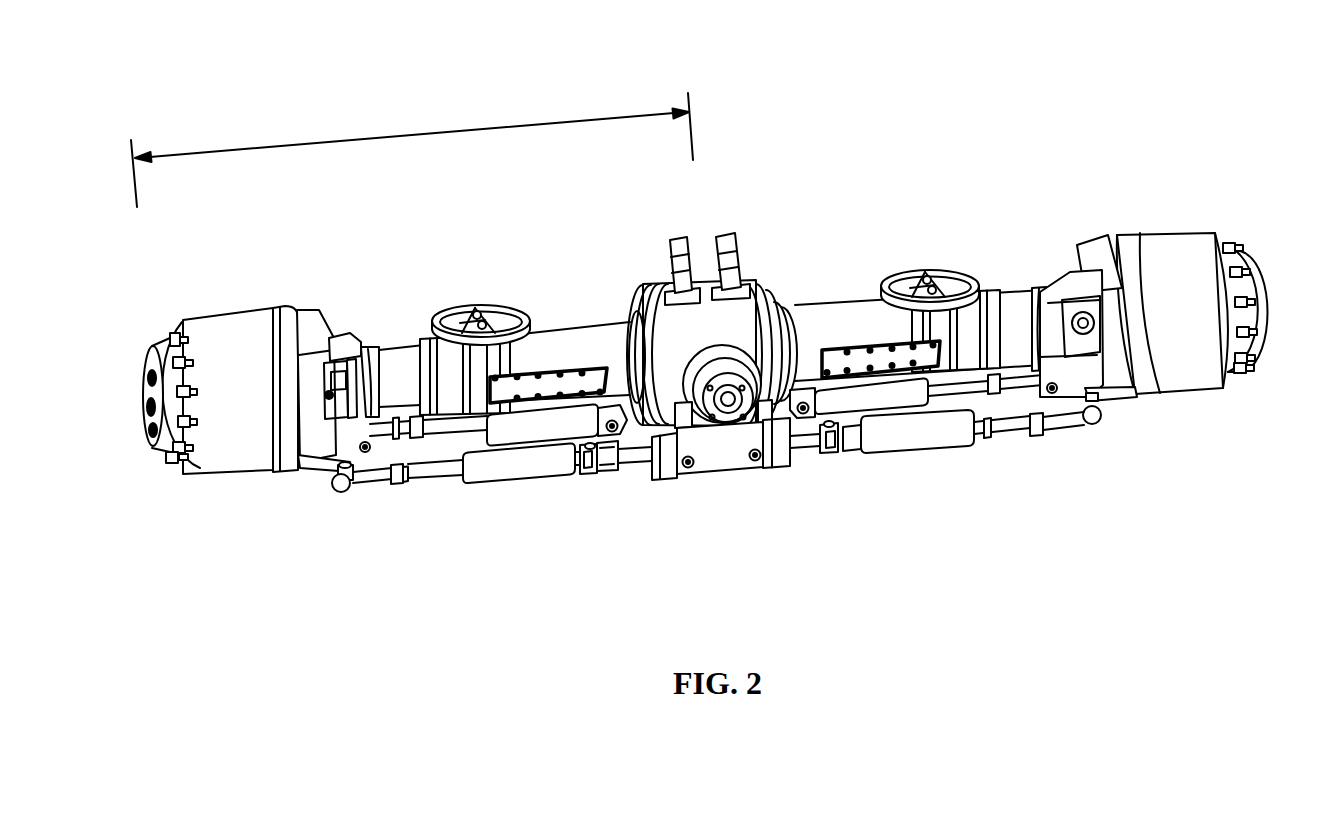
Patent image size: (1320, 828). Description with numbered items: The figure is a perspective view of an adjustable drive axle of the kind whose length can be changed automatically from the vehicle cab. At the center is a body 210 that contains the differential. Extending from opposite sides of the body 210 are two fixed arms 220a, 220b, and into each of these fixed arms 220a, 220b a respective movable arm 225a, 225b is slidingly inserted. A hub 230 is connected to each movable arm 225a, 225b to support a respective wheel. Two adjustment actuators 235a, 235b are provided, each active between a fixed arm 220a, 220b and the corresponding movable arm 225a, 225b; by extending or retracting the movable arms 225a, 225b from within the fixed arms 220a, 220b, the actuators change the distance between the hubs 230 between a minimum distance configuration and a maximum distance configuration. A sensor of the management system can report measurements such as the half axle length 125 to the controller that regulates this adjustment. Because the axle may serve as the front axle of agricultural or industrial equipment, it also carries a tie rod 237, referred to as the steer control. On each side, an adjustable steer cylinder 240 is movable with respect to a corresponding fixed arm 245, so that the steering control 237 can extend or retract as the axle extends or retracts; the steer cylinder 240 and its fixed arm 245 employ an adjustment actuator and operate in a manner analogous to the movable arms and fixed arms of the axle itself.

The half axle length 125 is at (412, 135).
The body 210 is at (743, 315).
The fixed arm 220a is at (591, 310).
The fixed arm 220b is at (822, 300).
The movable arm 225a is at (374, 347).
The movable arm 225b is at (1036, 300).
The hub 230 is at (223, 315).
The adjustment actuator 235a is at (530, 430).
The adjustment actuator 235b is at (877, 400).
The tie rod 237 is at (740, 482).
The adjustable steer cylinder 240 is at (485, 487).
The fixed arm 245 is at (640, 460).